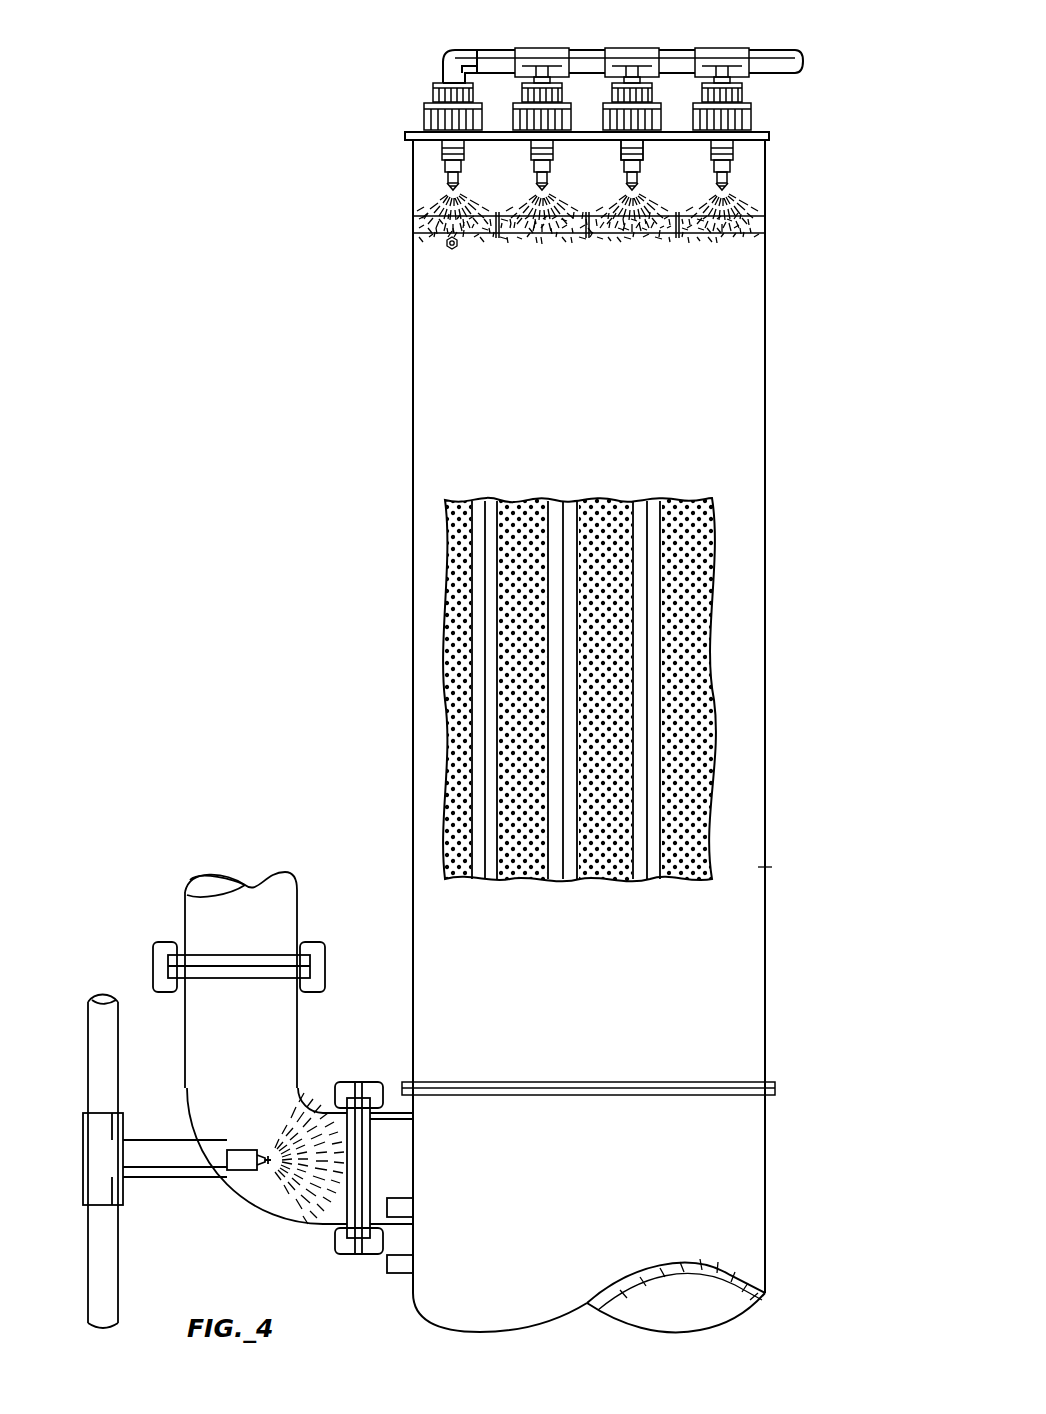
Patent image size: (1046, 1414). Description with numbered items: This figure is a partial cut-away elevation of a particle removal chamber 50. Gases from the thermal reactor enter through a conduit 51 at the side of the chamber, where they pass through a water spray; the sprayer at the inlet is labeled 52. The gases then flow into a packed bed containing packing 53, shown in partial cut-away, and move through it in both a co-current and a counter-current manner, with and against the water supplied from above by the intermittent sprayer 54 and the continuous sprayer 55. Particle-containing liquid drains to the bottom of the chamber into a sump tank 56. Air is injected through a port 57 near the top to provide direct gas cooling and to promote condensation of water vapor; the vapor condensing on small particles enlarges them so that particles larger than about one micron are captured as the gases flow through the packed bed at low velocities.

The particle removal chamber 50 is at (325, 493).
The conduit 51 is at (298, 1045).
The inlet spray nozzle 52 is at (291, 1201).
The packing 53 is at (705, 739).
The intermittent sprayer 54 is at (466, 152).
The continuous sprayer 55 is at (643, 153).
The sump tank 56 is at (713, 1184).
The port 57 is at (448, 249).